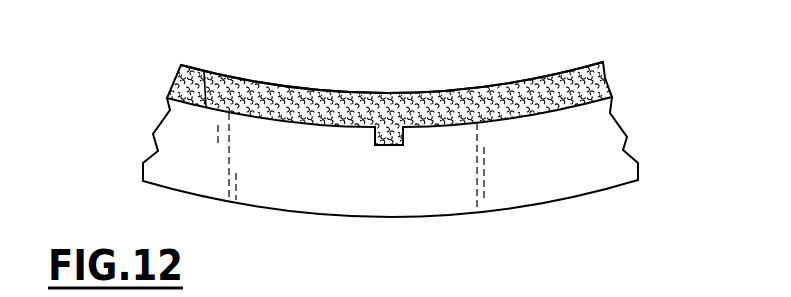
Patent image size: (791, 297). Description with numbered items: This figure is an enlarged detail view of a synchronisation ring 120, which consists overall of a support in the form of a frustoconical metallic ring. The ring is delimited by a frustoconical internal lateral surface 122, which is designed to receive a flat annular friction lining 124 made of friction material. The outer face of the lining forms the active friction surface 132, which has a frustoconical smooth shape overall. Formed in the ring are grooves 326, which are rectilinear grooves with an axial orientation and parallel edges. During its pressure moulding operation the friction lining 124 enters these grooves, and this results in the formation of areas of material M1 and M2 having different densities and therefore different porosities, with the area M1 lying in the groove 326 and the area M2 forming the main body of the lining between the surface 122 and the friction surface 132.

The synchronisation ring 120 is at (592, 198).
The frustoconical internal lateral surface 122 is at (207, 71).
The friction lining 124 is at (613, 77).
The active friction surface 132 is at (425, 92).
The grooves 326 is at (385, 147).
The area of material M1 is at (388, 124).
The area of material M2 is at (292, 104).